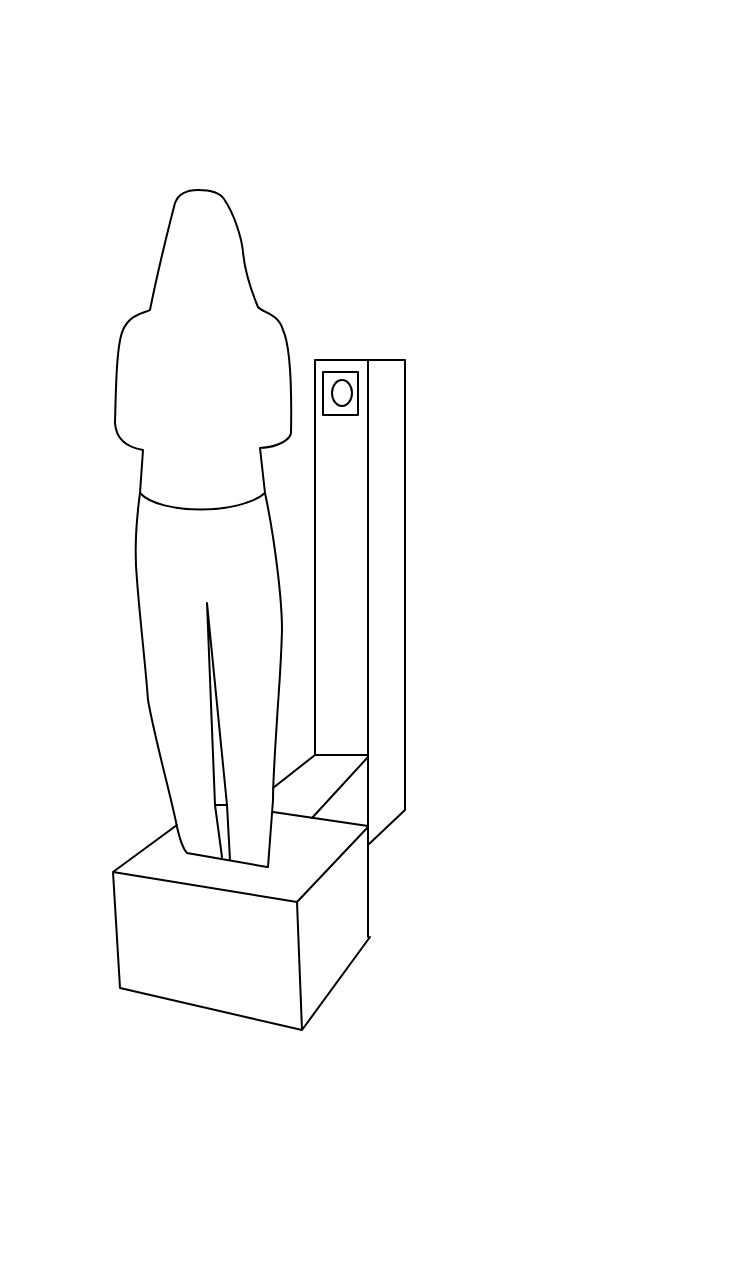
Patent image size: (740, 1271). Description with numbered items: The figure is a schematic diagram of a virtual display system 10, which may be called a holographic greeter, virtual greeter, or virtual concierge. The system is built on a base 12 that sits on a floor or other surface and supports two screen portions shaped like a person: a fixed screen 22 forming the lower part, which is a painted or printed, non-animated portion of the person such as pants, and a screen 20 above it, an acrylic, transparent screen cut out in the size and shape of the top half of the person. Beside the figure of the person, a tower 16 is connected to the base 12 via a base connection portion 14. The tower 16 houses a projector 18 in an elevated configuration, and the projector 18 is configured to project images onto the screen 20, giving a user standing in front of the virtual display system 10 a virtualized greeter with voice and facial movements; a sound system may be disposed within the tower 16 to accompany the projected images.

The virtual display system 10 is at (339, 58).
The base 12 is at (370, 887).
The base connection portion 14 is at (337, 790).
The tower 16 is at (405, 443).
The projector 18 is at (338, 377).
The screen 20 is at (198, 190).
The fixed screen 22 is at (138, 673).